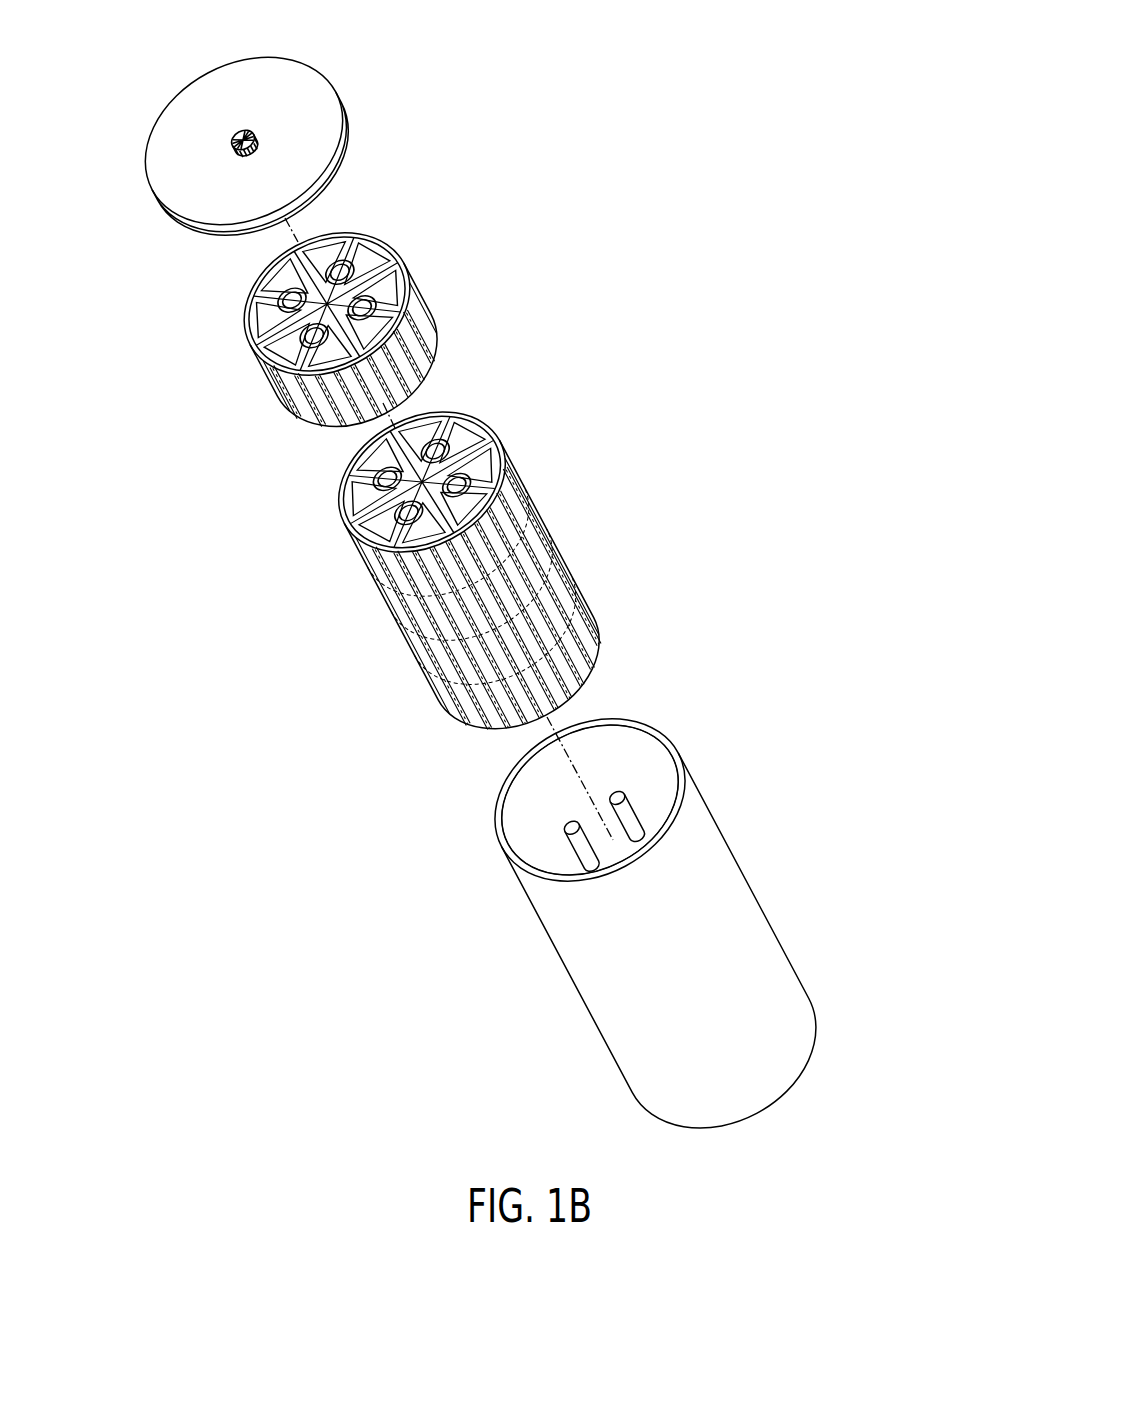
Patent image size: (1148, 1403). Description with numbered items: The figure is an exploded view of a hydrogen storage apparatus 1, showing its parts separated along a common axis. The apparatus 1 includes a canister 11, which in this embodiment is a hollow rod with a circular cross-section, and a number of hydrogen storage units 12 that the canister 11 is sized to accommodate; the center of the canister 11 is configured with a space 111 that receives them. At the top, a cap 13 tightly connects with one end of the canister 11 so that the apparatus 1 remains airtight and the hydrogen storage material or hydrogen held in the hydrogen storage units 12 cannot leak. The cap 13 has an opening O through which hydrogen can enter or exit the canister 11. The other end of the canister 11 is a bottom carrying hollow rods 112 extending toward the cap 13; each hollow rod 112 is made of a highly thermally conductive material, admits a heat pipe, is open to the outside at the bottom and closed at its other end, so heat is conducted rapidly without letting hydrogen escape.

The hydrogen storage apparatus 1 is at (556, 110).
The canister 11 is at (718, 827).
The space 111 is at (624, 758).
The hollow rod 112 is at (565, 825).
The hydrogen storage unit 12 is at (423, 290).
The cap 13 is at (312, 92).
The opening O is at (233, 125).